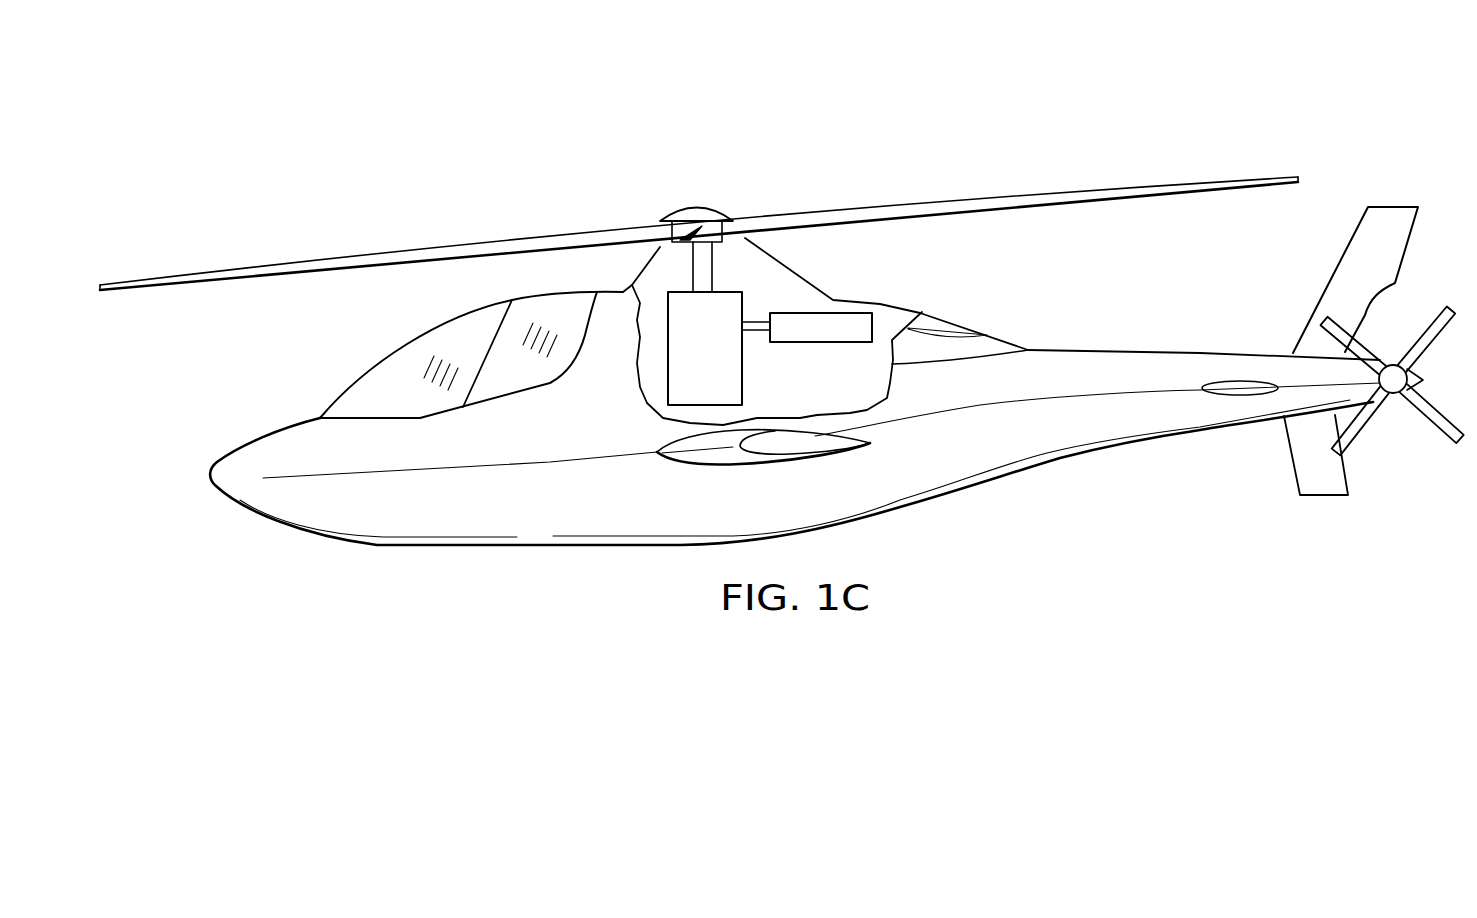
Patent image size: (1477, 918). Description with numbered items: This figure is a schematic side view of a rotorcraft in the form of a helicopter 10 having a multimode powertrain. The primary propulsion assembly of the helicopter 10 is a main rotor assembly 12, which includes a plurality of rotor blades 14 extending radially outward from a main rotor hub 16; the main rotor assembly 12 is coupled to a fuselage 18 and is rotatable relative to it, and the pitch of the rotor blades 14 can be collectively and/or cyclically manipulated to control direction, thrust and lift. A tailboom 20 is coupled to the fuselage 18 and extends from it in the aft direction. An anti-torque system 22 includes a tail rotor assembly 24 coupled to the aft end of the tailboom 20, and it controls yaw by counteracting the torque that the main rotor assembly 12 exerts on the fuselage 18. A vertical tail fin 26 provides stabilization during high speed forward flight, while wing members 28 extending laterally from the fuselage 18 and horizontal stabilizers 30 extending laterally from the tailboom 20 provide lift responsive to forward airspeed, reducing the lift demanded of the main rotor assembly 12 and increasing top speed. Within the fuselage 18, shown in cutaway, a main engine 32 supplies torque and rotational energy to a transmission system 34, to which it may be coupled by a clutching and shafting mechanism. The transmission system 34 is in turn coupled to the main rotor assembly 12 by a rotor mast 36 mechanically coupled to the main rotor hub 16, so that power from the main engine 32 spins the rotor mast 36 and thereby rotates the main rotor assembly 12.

The helicopter 10 is at (1060, 100).
The main rotor assembly 12 is at (902, 208).
The rotor blades 14 is at (473, 245).
The main rotor hub 16 is at (697, 205).
The fuselage 18 is at (530, 520).
The tailboom 20 is at (1063, 438).
The anti-torque system 22 is at (1425, 314).
The tail rotor assembly 24 is at (1433, 425).
The vertical tail fin 26 is at (1393, 205).
The wing members 28 is at (727, 467).
The horizontal stabilizers 30 is at (1230, 382).
The main engine 32 is at (851, 311).
The transmission system 34 is at (743, 370).
The rotor mast 36 is at (690, 273).